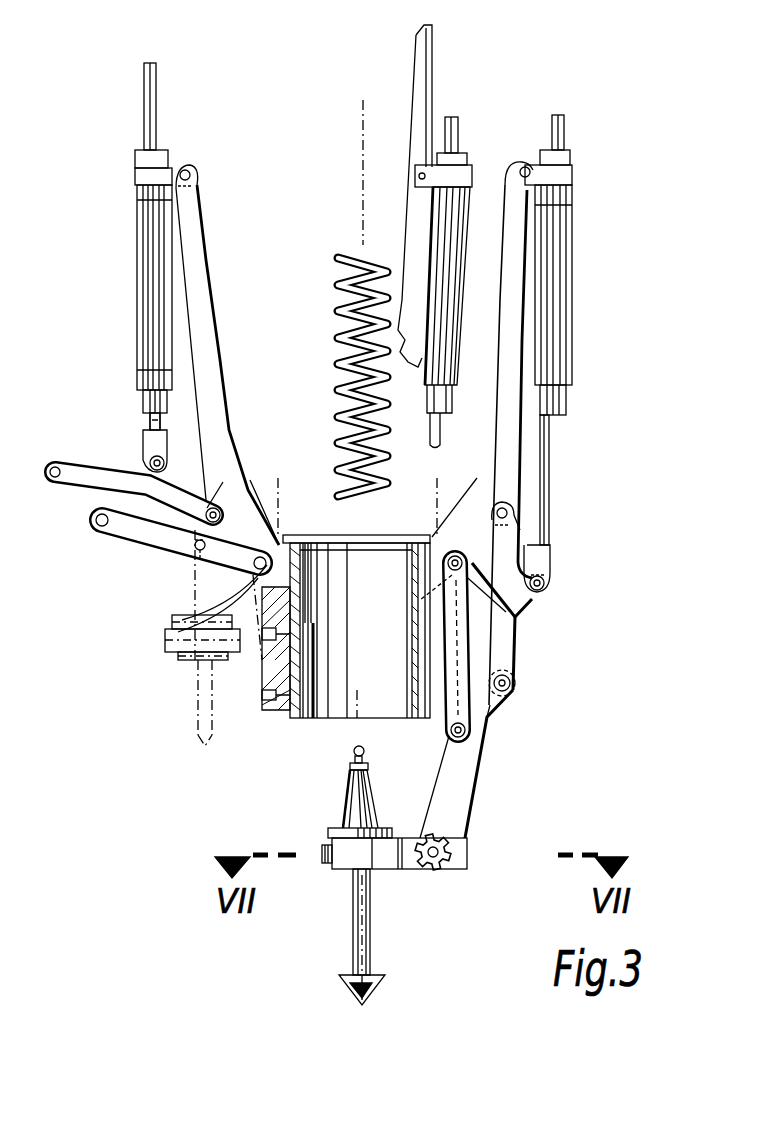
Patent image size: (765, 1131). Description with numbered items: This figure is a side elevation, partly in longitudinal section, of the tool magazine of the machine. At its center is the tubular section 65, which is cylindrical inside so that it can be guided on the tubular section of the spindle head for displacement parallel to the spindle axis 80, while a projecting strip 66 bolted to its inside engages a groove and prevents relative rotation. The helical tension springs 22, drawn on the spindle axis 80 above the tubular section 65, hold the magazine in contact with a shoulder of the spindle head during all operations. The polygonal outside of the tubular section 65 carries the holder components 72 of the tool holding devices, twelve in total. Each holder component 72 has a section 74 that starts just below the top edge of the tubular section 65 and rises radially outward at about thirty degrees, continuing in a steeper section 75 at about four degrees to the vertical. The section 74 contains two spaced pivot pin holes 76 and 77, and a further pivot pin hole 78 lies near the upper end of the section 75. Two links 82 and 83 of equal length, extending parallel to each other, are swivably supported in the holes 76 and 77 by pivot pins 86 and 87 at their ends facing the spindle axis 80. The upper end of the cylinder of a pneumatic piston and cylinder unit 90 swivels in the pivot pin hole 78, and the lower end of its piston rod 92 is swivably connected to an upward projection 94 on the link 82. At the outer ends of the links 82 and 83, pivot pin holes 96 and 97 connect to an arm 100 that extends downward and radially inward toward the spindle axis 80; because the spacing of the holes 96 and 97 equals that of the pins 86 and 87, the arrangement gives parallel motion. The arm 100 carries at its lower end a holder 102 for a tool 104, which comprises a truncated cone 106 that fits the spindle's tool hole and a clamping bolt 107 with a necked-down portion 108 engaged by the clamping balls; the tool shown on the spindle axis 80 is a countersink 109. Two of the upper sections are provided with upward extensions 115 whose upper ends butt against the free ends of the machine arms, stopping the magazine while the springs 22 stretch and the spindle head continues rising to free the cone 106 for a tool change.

The helical tension springs 22 is at (338, 316).
The tubular section 65 is at (330, 570).
The projecting strip 66 is at (305, 690).
The holder component 72 is at (246, 390).
The section 74 is at (268, 498).
The section 75 is at (205, 297).
The pivot pin hole 76 is at (195, 548).
The pivot pin hole 77 is at (195, 605).
The pivot pin hole 78 is at (195, 168).
The spindle axis 80 is at (363, 167).
The link 82 is at (92, 480).
The link 83 is at (130, 530).
The pivot pin 86 is at (215, 512).
The pivot pin 87 is at (178, 630).
The pneumatic piston and cylinder unit 90 is at (150, 277).
The piston rod 92 is at (153, 420).
The upward projection 94 is at (100, 505).
The pivot pin hole 96 is at (62, 465).
The pivot pin hole 97 is at (95, 535).
The arm 100 is at (470, 779).
The holder 102 is at (468, 838).
The tool 104 is at (191, 666).
The truncated cone 106 is at (348, 806).
The clamping bolt 107 is at (353, 750).
The necked-down portion 108 is at (352, 770).
The countersink 109 is at (353, 932).
The upward extensions 115 is at (422, 80).